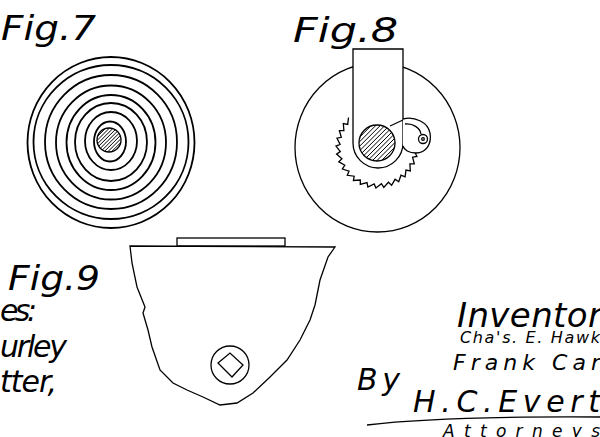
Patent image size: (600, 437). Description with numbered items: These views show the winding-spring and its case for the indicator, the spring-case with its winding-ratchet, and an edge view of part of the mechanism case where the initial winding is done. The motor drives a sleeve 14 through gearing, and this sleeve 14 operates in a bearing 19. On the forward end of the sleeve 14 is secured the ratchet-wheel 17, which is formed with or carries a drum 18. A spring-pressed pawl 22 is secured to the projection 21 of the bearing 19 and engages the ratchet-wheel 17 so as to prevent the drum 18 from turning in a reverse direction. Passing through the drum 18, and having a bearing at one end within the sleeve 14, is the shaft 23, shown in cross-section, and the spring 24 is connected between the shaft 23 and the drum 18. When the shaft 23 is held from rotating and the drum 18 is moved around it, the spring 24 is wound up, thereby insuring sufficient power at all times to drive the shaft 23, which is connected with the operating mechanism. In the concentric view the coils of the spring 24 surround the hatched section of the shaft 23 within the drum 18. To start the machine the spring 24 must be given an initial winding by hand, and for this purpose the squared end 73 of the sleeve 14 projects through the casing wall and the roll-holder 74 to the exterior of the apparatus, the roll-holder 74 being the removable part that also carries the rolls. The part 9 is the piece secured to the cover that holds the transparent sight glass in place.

In FIG. 9, the part 9 is at (202, 238).
In FIG. 8, the sleeve 14 is at (390, 126).
In FIG. 8, the ratchet-wheel 17 is at (402, 165).
In FIG. 7, the drum 18 is at (193, 133).
In FIG. 8, the drum 18 is at (377, 147).
In FIG. 8, the bearing 19 is at (398, 65).
In FIG. 8, the projection 21 is at (408, 145).
In FIG. 8, the spring-pressed pawl 22 is at (422, 125).
In FIG. 7, the shaft 23 is at (122, 132).
In FIG. 8, the shaft 23 is at (372, 137).
In FIG. 7, the spring 24 is at (133, 80).
In FIG. 9, the squared end 73 is at (232, 362).
In FIG. 9, the roll-holder 74 is at (232, 325).